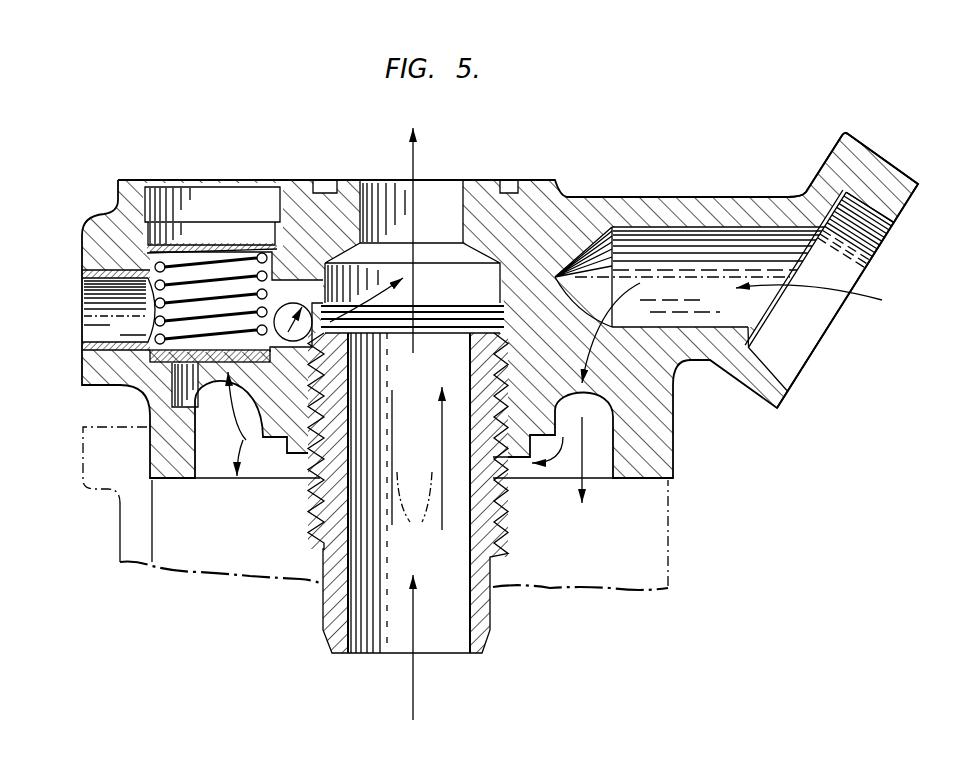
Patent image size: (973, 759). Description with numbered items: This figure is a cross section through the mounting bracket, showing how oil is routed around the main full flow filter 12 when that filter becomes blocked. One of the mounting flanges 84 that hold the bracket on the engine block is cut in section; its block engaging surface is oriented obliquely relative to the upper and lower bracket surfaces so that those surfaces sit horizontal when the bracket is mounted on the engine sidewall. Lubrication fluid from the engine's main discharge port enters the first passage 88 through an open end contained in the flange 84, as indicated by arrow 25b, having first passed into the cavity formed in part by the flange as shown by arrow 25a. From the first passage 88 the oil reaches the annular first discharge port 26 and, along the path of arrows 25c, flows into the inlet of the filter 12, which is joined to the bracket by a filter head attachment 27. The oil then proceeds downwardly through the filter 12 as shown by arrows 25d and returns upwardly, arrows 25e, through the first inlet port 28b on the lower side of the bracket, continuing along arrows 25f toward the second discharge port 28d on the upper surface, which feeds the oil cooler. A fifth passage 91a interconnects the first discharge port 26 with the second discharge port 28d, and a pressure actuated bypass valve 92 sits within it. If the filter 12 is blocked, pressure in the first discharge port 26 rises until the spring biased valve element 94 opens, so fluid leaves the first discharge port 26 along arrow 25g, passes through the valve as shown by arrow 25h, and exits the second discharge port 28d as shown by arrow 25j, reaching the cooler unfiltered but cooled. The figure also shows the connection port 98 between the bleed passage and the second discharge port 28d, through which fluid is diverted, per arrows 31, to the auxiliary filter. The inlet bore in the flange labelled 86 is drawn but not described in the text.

The main full flow lubrication fluid filter 12 is at (580, 556).
The first discharge port 26 is at (217, 437).
The filter head attachment 27 is at (117, 392).
The first inlet port 28b is at (380, 636).
The second discharge port 28d is at (465, 195).
The arrows showing diverted flow to auxiliary filter 31 is at (300, 300).
The mounting flange 84 is at (870, 163).
The inlet bore 86 is at (812, 250).
The first passage 88 is at (702, 226).
The fifth passage 91a is at (197, 380).
The pressure actuated bypass valve 92 is at (198, 195).
The spring biased valve element 94 is at (150, 347).
The connection port 98 is at (318, 312).
The arrow showing flow into bracket flange cavity 25a is at (880, 298).
The arrow showing flow into first passage 25b is at (600, 318).
The arrows showing flow through first discharge port 25c is at (560, 460).
The arrows showing downward flow through filter 25d is at (583, 497).
The arrows showing upward flow through first inlet port 25e is at (417, 645).
The arrows showing flow to cooler inlet 25f is at (417, 463).
The arrow showing bypass flow out of first discharge port 25g is at (262, 436).
The arrow showing flow through bypass valve 25h is at (300, 347).
The arrow showing flow out of second discharge port 25j is at (405, 187).